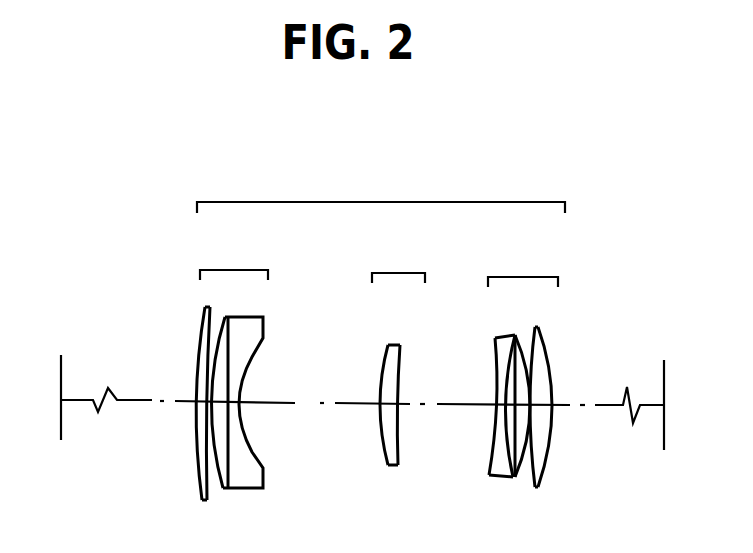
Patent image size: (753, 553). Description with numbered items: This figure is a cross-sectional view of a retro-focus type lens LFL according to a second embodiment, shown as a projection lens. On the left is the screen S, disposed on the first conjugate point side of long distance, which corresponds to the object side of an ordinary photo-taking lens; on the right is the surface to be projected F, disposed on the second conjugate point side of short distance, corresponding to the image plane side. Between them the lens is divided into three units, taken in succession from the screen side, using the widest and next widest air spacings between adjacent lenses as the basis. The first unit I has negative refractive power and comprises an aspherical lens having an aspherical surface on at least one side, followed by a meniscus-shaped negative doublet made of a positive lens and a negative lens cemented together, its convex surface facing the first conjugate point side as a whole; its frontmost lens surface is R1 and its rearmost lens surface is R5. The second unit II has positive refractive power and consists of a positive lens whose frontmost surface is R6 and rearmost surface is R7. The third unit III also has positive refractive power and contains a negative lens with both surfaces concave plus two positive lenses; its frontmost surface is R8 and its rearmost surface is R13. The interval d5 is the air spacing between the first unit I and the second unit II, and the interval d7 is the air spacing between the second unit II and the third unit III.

The frontmost lens surface of the first unit R1 is at (198, 342).
The rearmost lens surface of the first unit R5 is at (259, 347).
The frontmost lens surface of the second unit R6 is at (381, 378).
The rearmost lens surface of the second unit R7 is at (402, 377).
The frontmost lens surface of the third unit R8 is at (495, 367).
The rearmost lens surface of the third unit R13 is at (550, 360).
The interval between the first unit and the second unit d5 is at (380, 404).
The interval between the second unit and the third unit d7 is at (495, 405).
The screen S is at (61, 368).
The surface to be projected F is at (664, 382).
The retro-focus type lens LFL is at (381, 191).
The first unit I is at (243, 264).
The second unit II is at (408, 266).
The third unit III is at (538, 266).